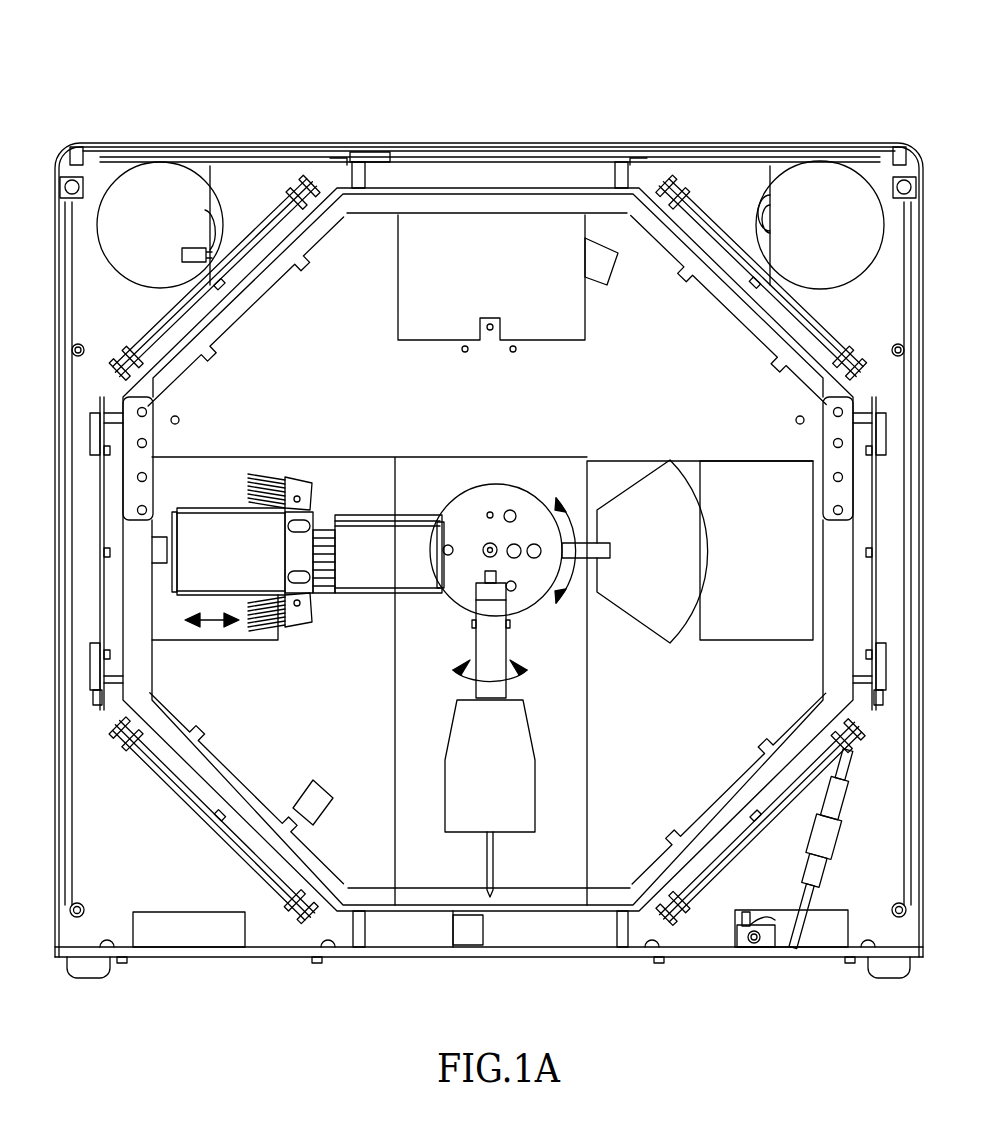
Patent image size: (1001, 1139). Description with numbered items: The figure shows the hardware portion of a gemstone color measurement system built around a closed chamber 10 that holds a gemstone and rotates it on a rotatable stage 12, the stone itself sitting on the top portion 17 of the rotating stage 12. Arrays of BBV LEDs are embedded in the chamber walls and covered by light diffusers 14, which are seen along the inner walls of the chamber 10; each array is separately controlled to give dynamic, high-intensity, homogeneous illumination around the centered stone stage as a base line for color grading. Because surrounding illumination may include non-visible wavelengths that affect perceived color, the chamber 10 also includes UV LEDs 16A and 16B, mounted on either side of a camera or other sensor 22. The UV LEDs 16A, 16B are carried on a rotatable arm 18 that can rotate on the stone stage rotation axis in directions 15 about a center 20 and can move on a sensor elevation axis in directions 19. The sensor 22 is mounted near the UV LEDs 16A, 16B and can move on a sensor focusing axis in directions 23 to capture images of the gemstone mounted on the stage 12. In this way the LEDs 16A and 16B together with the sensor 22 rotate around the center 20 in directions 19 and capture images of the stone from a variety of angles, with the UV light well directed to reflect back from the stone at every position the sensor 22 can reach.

The closed chamber 10 is at (133, 66).
The rotatable stage 12 is at (497, 644).
The light diffuser 14 is at (247, 298).
The stone stage rotation directions 15 is at (455, 688).
The UV LED 16A is at (310, 497).
The UV LED 16B is at (307, 607).
The top portion of rotating stage 17 is at (482, 560).
The rotatable arm 18 is at (655, 610).
The sensor elevation directions 19 is at (576, 520).
The center 20 is at (483, 545).
The sensor 22 is at (402, 569).
The sensor focusing directions 23 is at (210, 625).